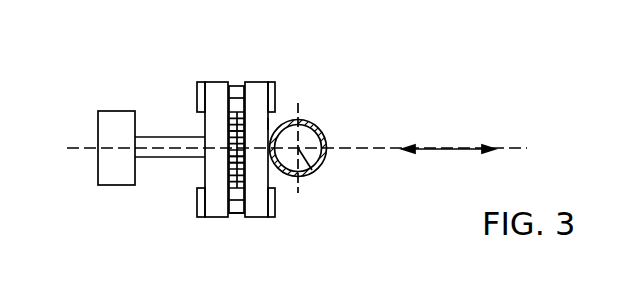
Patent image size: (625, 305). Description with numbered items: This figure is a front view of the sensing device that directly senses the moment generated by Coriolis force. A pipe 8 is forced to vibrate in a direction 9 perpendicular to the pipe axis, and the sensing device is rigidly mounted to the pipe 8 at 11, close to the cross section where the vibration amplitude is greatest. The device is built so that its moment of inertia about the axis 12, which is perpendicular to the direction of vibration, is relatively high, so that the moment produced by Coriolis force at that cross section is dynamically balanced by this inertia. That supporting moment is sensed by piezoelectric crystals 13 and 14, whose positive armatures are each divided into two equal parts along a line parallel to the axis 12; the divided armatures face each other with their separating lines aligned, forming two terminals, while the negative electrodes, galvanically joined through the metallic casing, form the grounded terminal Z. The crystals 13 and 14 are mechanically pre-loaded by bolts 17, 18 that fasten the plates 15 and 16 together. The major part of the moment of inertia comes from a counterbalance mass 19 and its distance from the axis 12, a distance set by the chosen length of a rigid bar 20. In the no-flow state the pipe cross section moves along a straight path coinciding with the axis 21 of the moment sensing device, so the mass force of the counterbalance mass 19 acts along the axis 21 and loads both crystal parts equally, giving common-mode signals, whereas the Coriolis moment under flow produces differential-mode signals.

The pipe 8 is at (312, 125).
The direction of vibration 9 is at (443, 147).
The mounting location 11 is at (271, 124).
The axis 12 is at (303, 155).
The piezoelectric crystal 13 is at (243, 165).
The piezoelectric crystal 14 is at (229, 133).
The plate 15 is at (212, 82).
The plate 16 is at (258, 82).
The bolt 17 is at (240, 86).
The bolt 18 is at (233, 205).
The counterbalance mass 19 is at (118, 182).
The rigid bar 20 is at (157, 158).
The axis of moment sensing device 21 is at (82, 147).
The grounded terminal Z is at (222, 160).